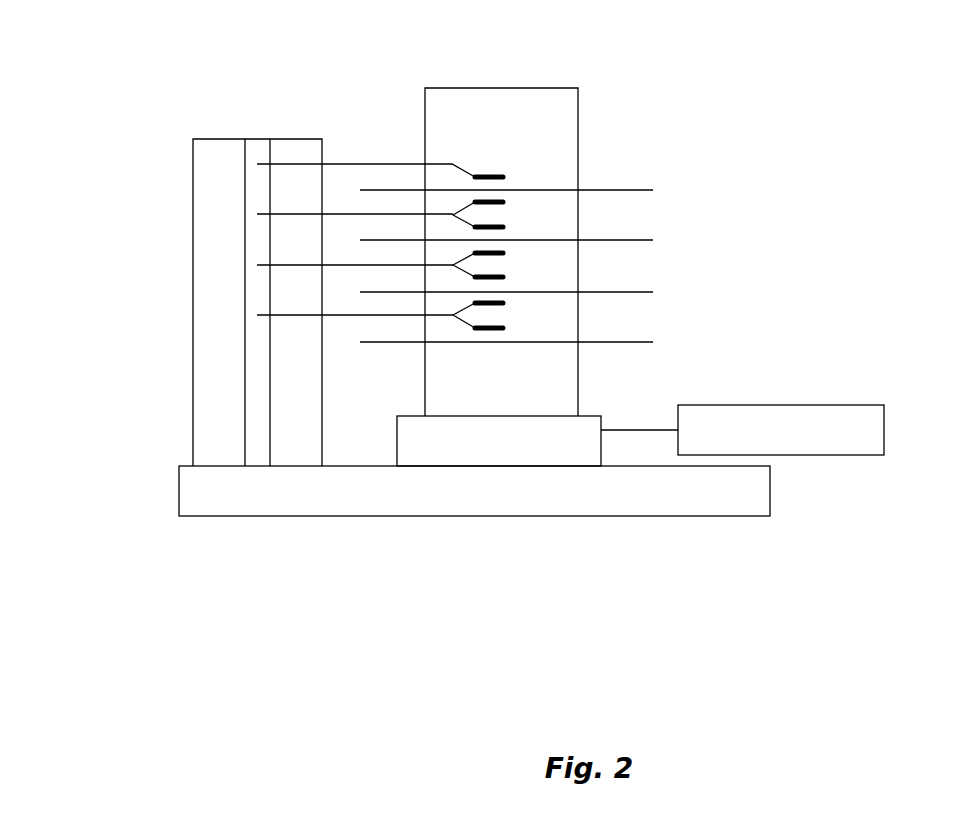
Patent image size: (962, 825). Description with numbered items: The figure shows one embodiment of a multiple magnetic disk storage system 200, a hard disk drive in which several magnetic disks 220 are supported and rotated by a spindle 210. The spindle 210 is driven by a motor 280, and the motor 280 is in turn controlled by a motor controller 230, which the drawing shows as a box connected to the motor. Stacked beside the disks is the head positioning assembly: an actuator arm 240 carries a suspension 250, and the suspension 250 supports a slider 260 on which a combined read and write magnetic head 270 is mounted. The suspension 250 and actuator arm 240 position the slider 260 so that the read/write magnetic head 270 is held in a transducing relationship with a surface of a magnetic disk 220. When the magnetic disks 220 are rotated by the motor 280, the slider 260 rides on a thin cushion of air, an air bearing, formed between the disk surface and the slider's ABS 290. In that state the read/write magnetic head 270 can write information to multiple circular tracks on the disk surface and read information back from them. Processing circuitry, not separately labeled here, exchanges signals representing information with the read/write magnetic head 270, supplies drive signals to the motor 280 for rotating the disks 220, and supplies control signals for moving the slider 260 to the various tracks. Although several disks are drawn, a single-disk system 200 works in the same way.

The multiple magnetic disk storage system 200 is at (63, 590).
The spindle 210 is at (563, 88).
The magnetic disks 220 is at (718, 317).
The motor controller 230 is at (810, 405).
The actuator arm 240 is at (373, 162).
The suspension 250 is at (463, 164).
The slider 260 is at (493, 173).
The read/write magnetic head 270 is at (501, 328).
The motor 280 is at (590, 412).
The ABS 290 is at (500, 170).